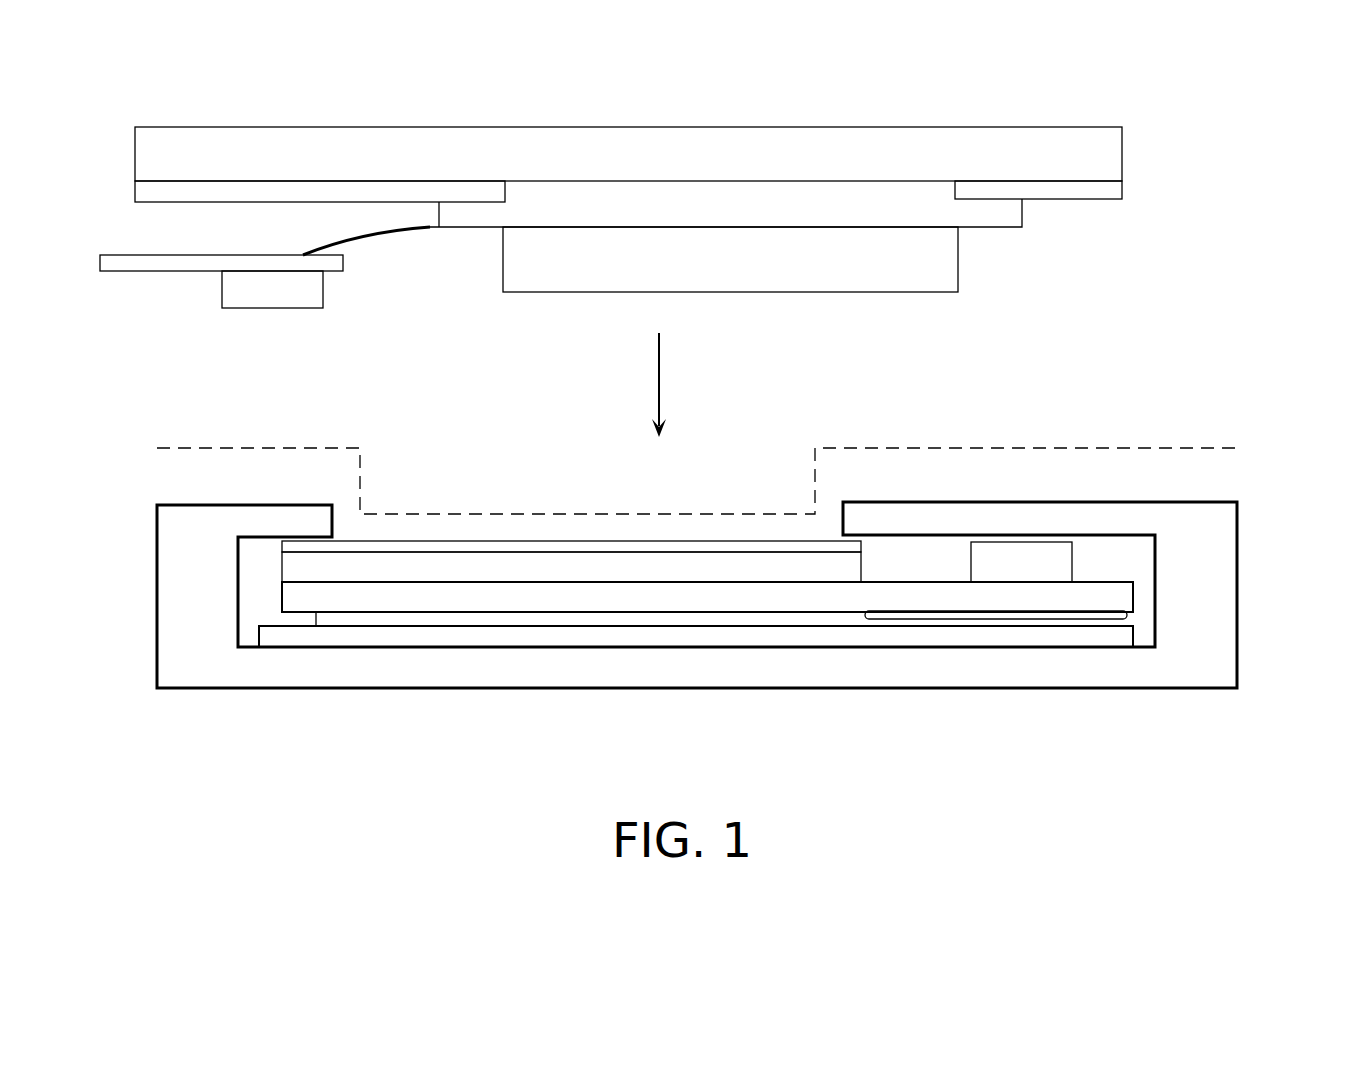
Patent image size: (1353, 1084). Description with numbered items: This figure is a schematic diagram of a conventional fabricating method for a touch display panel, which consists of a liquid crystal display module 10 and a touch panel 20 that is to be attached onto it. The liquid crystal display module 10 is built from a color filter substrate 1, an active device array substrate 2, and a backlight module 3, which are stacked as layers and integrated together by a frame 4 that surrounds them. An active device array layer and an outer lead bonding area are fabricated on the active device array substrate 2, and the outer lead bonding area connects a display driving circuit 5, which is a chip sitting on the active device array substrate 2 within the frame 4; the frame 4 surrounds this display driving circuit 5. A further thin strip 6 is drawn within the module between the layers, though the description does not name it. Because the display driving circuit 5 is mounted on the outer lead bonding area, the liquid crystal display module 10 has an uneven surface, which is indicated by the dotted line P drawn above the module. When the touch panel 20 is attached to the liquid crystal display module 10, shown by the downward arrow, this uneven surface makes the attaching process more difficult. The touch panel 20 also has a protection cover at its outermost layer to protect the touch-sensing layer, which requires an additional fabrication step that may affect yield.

The color filter substrate 1 is at (295, 564).
The active device array substrate 2 is at (293, 593).
The backlight module 3 is at (268, 638).
The frame 4 is at (186, 664).
The display driving circuit 5 is at (1055, 560).
The adhesive strip 6 is at (1005, 619).
The liquid crystal display module 10 is at (716, 630).
The touch panel 20 is at (1178, 125).
The dotted line P is at (1167, 447).